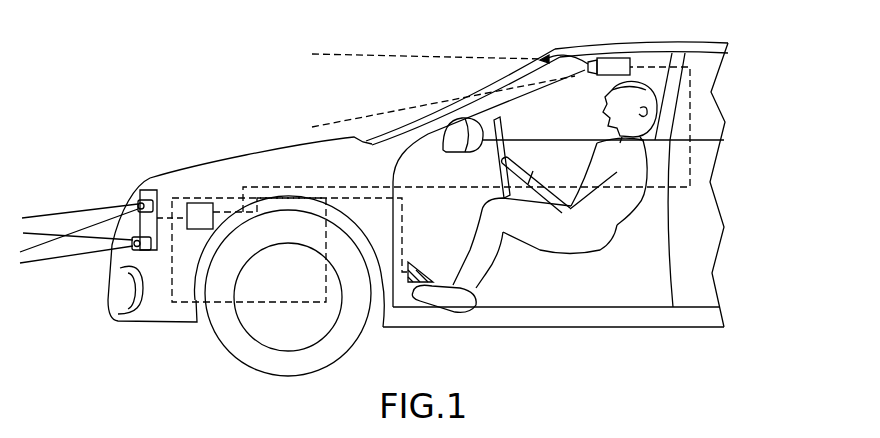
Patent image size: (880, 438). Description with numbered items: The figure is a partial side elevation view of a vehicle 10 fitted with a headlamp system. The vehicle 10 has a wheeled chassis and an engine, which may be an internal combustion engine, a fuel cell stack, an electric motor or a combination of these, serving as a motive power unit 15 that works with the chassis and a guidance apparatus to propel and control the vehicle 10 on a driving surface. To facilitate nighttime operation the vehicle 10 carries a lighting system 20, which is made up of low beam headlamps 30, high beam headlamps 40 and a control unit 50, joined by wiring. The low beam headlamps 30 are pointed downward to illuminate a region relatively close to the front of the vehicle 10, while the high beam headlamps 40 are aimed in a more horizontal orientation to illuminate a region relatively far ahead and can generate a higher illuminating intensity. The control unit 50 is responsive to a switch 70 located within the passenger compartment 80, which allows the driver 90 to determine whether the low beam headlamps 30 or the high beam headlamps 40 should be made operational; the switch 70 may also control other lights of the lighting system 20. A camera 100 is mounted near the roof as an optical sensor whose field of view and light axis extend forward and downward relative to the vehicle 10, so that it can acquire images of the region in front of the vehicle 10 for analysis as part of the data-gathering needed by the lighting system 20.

The vehicle 10 is at (737, 92).
The motive power unit 15 is at (280, 303).
The lighting system 20 is at (150, 178).
The low beam headlamps 30 is at (156, 203).
The high beam headlamps 40 is at (156, 242).
The control unit 50 is at (212, 198).
The switch 70 is at (415, 266).
The passenger compartment 80 is at (563, 116).
The driver 90 is at (620, 198).
The camera 100 is at (622, 58).